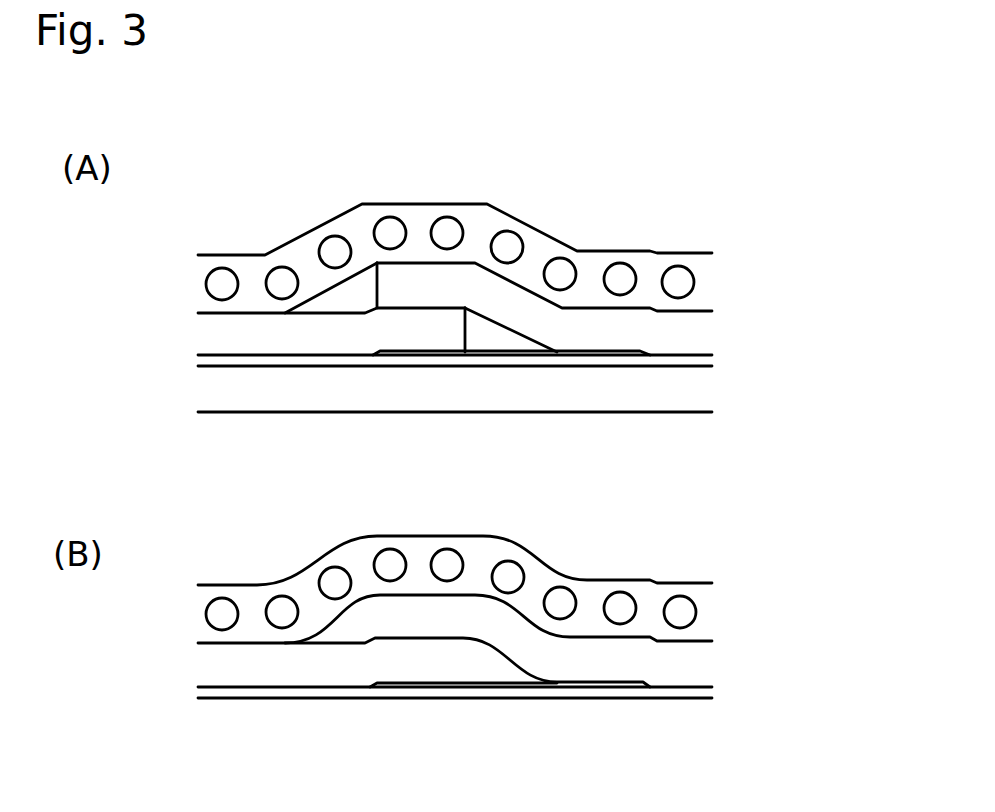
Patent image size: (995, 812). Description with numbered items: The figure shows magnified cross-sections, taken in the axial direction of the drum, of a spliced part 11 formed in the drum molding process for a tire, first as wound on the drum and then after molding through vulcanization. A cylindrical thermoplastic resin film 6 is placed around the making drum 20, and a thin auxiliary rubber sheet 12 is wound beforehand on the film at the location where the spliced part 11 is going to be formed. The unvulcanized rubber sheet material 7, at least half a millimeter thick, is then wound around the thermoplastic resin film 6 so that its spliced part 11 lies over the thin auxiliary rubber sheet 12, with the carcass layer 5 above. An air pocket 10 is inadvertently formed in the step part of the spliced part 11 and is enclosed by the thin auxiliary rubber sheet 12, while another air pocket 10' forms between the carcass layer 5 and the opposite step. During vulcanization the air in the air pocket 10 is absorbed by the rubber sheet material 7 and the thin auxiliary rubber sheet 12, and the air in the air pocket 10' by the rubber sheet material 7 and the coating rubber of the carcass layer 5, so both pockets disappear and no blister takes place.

The carcass layer 5 is at (528, 260).
The thermoplastic resin film 6 is at (255, 362).
The rubber sheet material 7 is at (638, 327).
The air pocket 10 is at (511, 392).
The air pocket 10' is at (320, 239).
The spliced part 11 is at (435, 288).
The thin auxiliary rubber sheet 12 is at (618, 357).
The making drum 20 is at (215, 391).